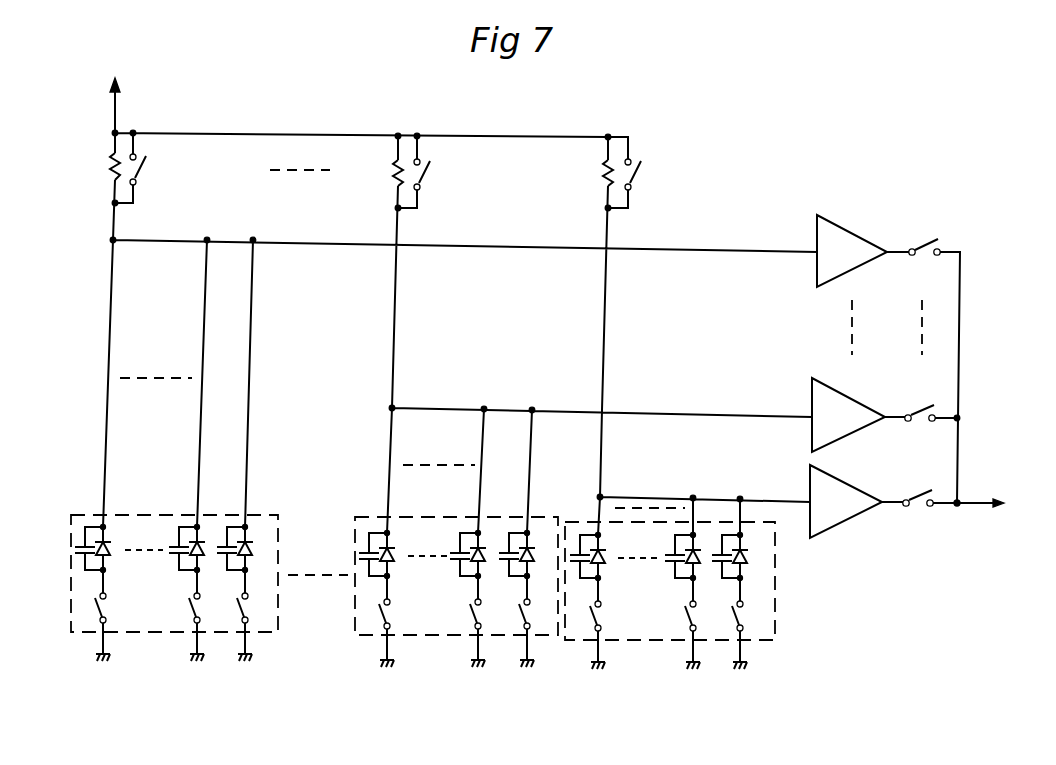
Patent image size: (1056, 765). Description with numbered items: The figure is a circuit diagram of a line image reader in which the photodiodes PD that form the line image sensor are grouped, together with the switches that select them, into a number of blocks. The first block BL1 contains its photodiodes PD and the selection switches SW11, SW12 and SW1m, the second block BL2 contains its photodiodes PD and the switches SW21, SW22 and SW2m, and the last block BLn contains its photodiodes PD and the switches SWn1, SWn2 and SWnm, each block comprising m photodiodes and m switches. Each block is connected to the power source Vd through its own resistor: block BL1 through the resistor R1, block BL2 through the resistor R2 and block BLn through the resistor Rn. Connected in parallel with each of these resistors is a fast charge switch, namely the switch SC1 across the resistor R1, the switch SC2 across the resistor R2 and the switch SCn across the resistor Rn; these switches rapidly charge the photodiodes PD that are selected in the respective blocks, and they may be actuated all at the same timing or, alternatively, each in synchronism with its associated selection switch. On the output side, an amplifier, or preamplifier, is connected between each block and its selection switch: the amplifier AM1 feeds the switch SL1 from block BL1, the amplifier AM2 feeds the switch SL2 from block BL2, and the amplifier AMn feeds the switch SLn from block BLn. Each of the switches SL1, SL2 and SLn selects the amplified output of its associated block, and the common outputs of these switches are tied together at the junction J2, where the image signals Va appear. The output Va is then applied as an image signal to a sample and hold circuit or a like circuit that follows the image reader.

The power source Vd is at (120, 96).
The resistor Rn is at (106, 172).
The fast charge switch SCn is at (142, 168).
The resistor R2 is at (392, 174).
The fast charge switch SC2 is at (426, 170).
The resistor R1 is at (604, 174).
The fast charge switch SC1 is at (637, 170).
The amplifier AMn is at (816, 228).
The switch SLn is at (925, 242).
The amplifier AM2 is at (812, 396).
The switch SL2 is at (918, 406).
The amplifier AM1 is at (808, 485).
The switch SL1 is at (921, 492).
The junction J2 is at (953, 517).
The image signal Va is at (996, 505).
The photodiode PD is at (421, 564).
The switch SWnm is at (92, 627).
The switch SWn2 is at (161, 615).
The switch SWn1 is at (225, 628).
The block BLn is at (157, 635).
The switch SW2m is at (376, 632).
The switch SW22 is at (442, 621).
The switch SW21 is at (507, 634).
The block BL2 is at (439, 637).
The switch SW1m is at (590, 634).
The switch SW12 is at (654, 623).
The switch SW11 is at (722, 635).
The block BL1 is at (654, 640).